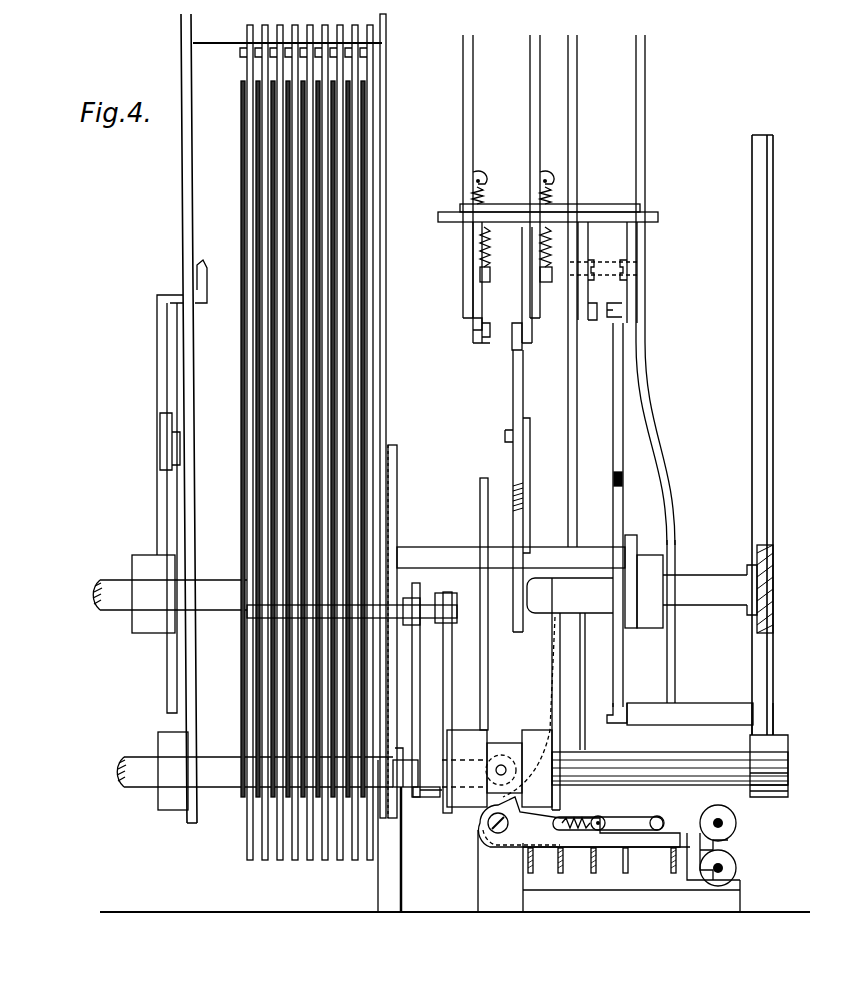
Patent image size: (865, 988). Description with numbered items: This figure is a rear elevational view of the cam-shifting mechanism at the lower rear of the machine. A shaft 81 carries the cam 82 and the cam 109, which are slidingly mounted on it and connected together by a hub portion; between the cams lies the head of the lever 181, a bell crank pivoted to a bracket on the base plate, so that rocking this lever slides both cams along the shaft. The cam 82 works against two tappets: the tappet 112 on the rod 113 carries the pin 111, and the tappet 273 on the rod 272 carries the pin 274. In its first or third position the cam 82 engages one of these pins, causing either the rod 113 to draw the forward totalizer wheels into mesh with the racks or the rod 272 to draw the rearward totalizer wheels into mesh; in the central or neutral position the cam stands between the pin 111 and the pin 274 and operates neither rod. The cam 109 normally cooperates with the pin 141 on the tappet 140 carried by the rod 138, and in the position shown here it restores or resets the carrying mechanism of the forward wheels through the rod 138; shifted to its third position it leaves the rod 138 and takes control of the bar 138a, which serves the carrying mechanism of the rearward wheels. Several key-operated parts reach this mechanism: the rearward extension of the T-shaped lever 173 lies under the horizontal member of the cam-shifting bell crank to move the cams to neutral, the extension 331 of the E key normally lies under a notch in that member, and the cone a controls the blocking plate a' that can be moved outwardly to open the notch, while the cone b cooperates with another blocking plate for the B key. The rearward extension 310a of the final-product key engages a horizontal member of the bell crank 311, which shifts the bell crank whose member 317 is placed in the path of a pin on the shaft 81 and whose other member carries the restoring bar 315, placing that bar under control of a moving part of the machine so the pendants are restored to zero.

The bar 138a is at (468, 56).
The rod 138 is at (530, 117).
The rod 272 is at (577, 137).
The rod 113 is at (646, 128).
The tappet 112 is at (637, 232).
The tappet 273 is at (601, 271).
The pin 111 is at (623, 300).
The tappet 140 is at (520, 272).
The pin 141 is at (511, 340).
The pin 274 is at (590, 322).
The cam 109 is at (512, 385).
The cam 82 is at (615, 432).
The restoring bar 315 is at (413, 594).
The shaft 81 is at (705, 580).
The bell crank member 317 is at (552, 646).
The lever 181 is at (567, 670).
The bell crank 311 is at (527, 830).
The blocking plate a' is at (617, 809).
The cone a is at (733, 823).
The cone b is at (736, 868).
The extension 331 is at (680, 873).
The rearward extension 310a is at (593, 873).
The T-shaped lever 173 is at (625, 874).